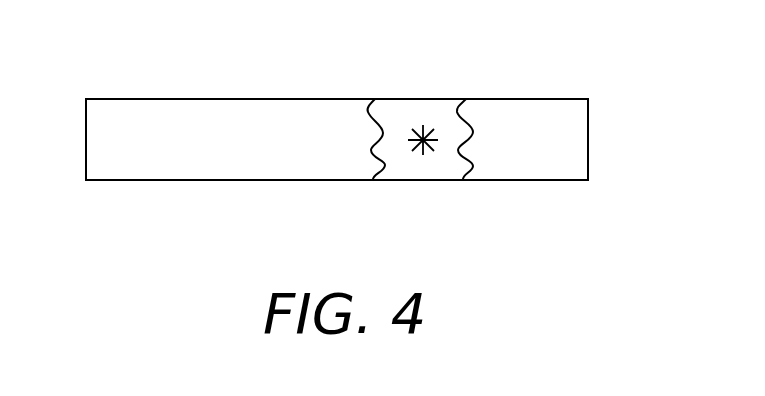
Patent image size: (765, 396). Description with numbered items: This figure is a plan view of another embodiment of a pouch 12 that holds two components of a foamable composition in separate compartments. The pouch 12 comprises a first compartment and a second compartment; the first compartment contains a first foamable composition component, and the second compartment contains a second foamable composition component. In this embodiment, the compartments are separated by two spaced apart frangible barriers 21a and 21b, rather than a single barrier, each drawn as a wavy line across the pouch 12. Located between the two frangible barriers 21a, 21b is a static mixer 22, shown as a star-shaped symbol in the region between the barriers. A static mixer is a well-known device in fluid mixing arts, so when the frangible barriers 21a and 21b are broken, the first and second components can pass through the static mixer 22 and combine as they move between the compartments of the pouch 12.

The pouch 12 is at (588, 140).
The frangible barrier 21a is at (371, 143).
The frangible barrier 21b is at (472, 133).
The static mixer 22 is at (423, 146).